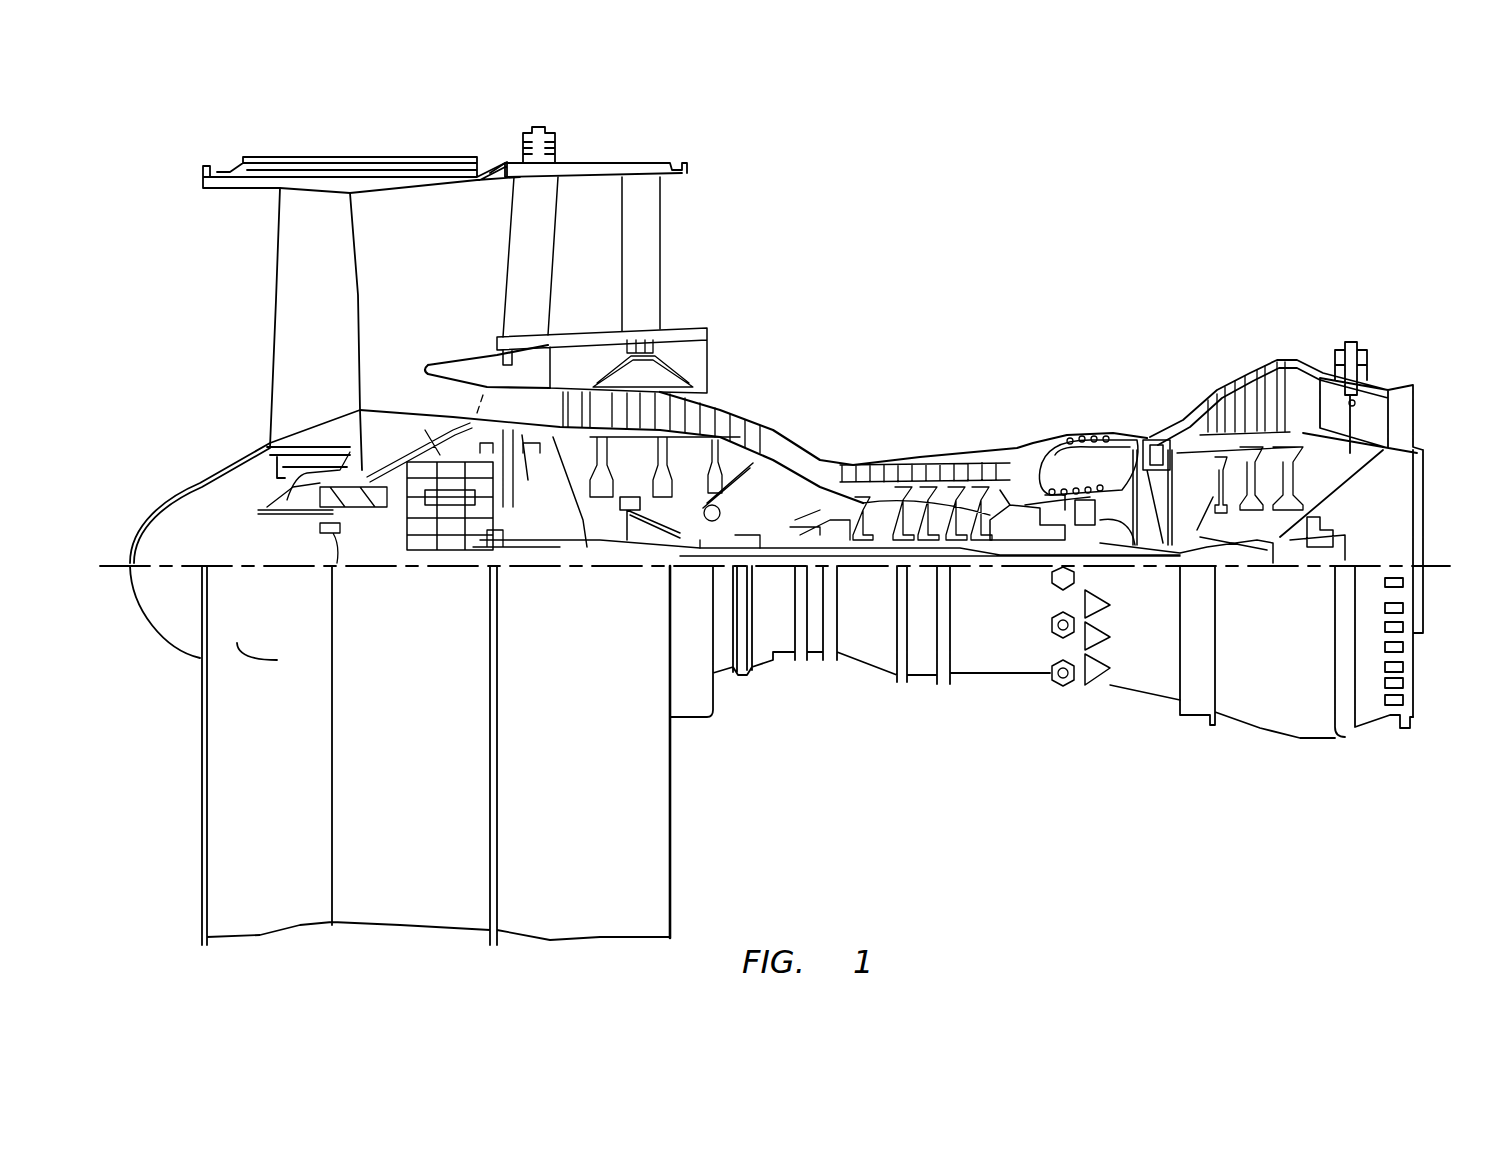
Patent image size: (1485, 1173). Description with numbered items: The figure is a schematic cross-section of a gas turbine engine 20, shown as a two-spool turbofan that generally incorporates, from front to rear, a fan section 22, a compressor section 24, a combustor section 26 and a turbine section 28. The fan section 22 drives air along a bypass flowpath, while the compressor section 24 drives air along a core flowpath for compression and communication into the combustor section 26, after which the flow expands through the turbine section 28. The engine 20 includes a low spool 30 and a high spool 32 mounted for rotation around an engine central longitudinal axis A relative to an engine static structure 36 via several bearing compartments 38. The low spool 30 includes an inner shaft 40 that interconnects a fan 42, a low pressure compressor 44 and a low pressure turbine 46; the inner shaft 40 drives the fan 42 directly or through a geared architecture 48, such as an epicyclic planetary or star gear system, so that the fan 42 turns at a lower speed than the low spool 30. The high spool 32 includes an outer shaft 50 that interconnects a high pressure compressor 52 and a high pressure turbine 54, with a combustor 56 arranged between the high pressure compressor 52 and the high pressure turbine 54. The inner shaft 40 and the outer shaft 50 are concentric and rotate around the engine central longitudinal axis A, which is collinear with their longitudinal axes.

The gas turbine engine 20 is at (1141, 219).
The fan section 22 is at (198, 133).
The compressor section 24 is at (505, 303).
The combustor section 26 is at (1035, 303).
The turbine section 28 is at (1355, 303).
The low spool 30 is at (777, 510).
The high spool 32 is at (997, 490).
The engine static structure 36 is at (920, 677).
The bearing compartments 38 is at (530, 642).
The inner shaft 40 is at (1120, 558).
The fan 42 is at (337, 345).
The low pressure compressor 44 is at (687, 407).
The low pressure turbine 46 is at (1258, 396).
The geared architecture 48 is at (450, 533).
The outer shaft 50 is at (1133, 527).
The high pressure compressor 52 is at (846, 477).
The high pressure turbine 54 is at (1156, 468).
The combustor 56 is at (1087, 471).
The engine central longitudinal axis A is at (1442, 567).